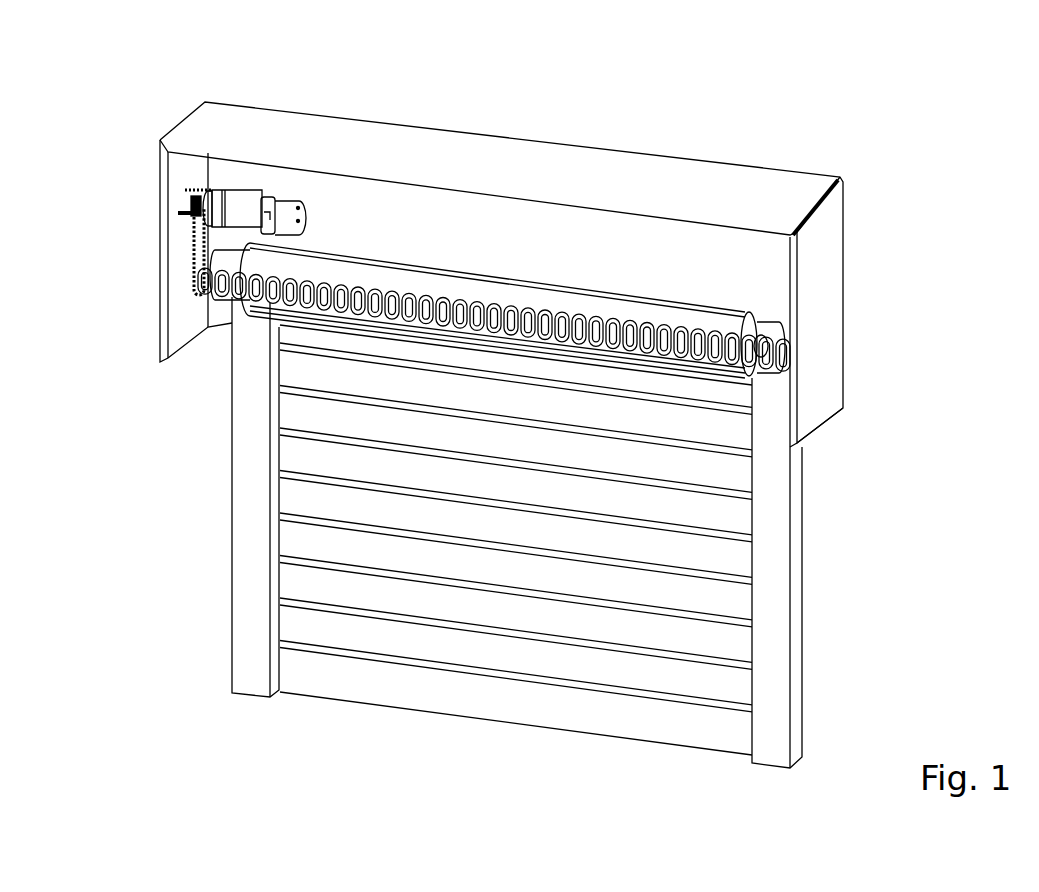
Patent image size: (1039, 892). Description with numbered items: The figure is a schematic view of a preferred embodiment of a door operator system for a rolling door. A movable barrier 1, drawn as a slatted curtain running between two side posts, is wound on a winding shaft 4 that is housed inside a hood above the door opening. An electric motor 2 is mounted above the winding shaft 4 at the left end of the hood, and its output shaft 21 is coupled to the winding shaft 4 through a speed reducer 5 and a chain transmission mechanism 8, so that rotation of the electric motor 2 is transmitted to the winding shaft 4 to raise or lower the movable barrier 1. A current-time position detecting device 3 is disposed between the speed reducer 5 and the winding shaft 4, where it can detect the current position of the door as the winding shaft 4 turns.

The movable barrier 1 is at (378, 690).
The electric motor 2 is at (288, 207).
The current-time position detecting device 3 is at (212, 202).
The winding shaft 4 is at (445, 297).
The speed reducer 5 is at (237, 207).
The chain transmission mechanism 8 is at (188, 248).
The output shaft 21 is at (278, 194).